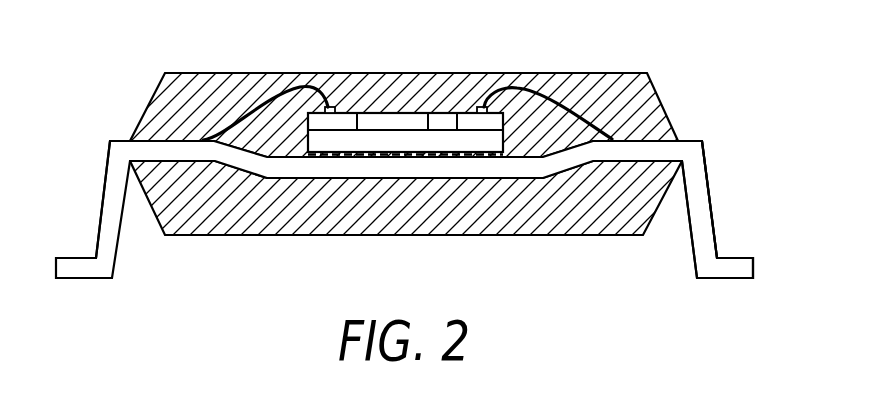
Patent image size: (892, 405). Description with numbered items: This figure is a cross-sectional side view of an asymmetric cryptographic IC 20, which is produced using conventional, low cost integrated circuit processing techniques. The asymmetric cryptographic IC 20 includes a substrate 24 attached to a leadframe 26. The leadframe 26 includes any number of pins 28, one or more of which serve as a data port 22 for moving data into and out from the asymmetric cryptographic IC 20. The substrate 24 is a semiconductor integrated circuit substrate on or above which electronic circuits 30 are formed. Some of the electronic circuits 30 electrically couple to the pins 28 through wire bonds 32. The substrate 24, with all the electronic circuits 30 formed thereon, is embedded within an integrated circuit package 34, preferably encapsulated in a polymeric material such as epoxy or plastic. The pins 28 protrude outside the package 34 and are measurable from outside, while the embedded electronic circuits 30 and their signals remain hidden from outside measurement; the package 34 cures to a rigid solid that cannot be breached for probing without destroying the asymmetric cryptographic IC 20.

The asymmetric cryptographic IC 20 is at (425, 174).
The data port 22 is at (93, 278).
The substrate 24 is at (308, 143).
The leadframe 26 is at (727, 258).
The pins 28 is at (102, 218).
The electronic circuits 30 is at (343, 113).
The wire bonds 32 is at (503, 95).
The integrated circuit package 34 is at (637, 83).